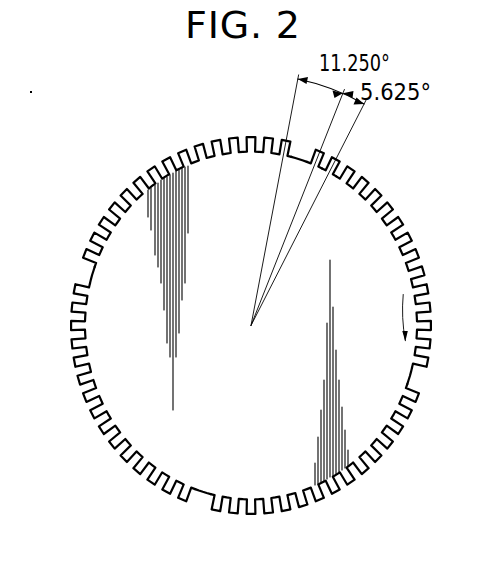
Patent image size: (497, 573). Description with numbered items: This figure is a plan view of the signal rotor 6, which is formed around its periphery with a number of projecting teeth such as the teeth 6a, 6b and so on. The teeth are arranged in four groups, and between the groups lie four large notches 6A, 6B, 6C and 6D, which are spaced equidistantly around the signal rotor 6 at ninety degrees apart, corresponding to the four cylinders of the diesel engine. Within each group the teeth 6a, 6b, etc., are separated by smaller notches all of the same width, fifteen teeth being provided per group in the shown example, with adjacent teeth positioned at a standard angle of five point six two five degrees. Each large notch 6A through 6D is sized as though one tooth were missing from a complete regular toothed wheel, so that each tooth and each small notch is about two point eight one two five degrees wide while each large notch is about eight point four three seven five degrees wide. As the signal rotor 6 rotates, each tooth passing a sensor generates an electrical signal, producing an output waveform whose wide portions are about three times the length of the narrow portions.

The signal rotor 6 is at (391, 399).
The large notch 6A is at (294, 156).
The large notch 6B is at (412, 378).
The large notch 6C is at (203, 497).
The large notch 6D is at (89, 281).
The projecting tooth 6a is at (318, 150).
The projecting tooth 6b is at (338, 160).